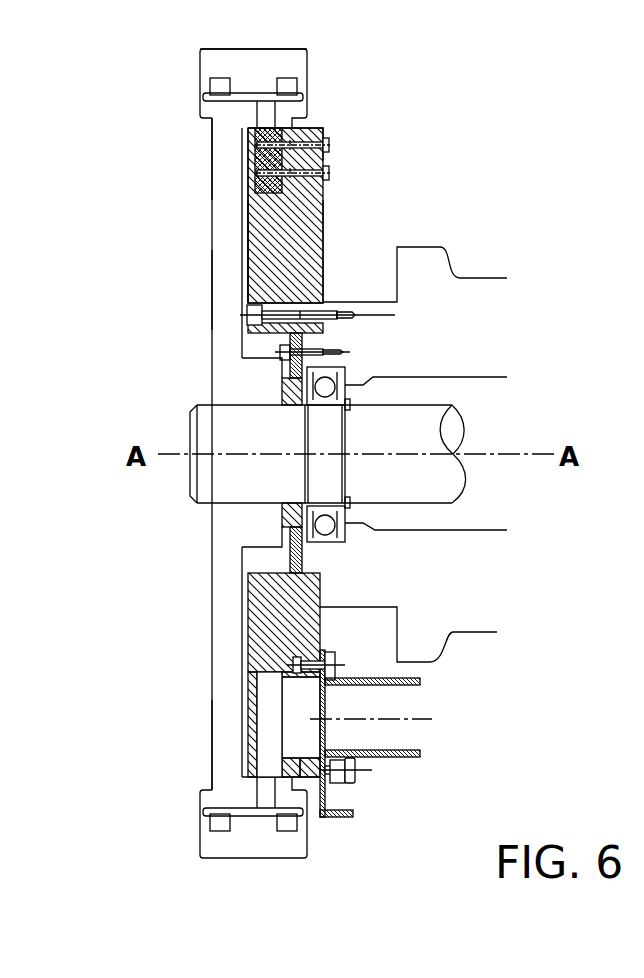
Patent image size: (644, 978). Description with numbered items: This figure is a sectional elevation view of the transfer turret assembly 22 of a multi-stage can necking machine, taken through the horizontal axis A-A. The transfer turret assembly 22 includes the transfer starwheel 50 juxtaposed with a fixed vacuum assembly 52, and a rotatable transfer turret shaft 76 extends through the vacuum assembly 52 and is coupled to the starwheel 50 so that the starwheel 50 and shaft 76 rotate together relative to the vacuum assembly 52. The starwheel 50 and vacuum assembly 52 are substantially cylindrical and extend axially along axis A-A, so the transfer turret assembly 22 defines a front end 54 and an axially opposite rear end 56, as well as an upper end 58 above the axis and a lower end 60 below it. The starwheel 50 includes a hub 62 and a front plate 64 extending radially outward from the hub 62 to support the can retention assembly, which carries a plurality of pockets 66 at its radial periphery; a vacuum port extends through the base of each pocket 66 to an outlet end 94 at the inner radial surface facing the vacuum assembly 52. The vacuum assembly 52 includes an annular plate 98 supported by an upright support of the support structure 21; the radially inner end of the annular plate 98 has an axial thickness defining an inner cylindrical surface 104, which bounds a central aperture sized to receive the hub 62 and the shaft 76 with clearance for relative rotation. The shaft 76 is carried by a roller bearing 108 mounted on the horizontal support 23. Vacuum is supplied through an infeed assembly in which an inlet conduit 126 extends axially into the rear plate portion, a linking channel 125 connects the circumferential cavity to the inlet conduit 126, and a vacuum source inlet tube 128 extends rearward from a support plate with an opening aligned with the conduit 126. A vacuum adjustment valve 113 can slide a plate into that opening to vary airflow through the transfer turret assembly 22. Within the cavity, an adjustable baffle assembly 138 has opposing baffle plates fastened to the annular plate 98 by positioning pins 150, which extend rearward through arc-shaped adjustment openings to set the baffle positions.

The transfer turret assembly 22 is at (176, 46).
The pockets 66 is at (307, 63).
The outlet end 94 is at (276, 108).
The adjustable baffle assembly 138 is at (338, 127).
The positioning pins 150 is at (328, 175).
The rear end 56 is at (338, 214).
The front plate 64 is at (243, 240).
The vacuum assembly 52 is at (340, 282).
The horizontal support 23 is at (492, 278).
The upper end 58 is at (200, 140).
The front end 54 is at (200, 228).
The transfer starwheel 50 is at (200, 290).
The hub 62 is at (258, 358).
The roller bearing 108 is at (345, 367).
The transfer turret shaft 76 is at (425, 405).
The inner cylindrical surface 104 is at (262, 573).
The annular plate 98 is at (320, 591).
The support structure 21 is at (483, 632).
The linking channel 125 is at (258, 695).
The lower end 60 is at (200, 731).
The vacuum source inlet tube 128 is at (400, 757).
The vacuum adjustment valve 113 is at (343, 830).
The inlet conduit 126 is at (300, 777).